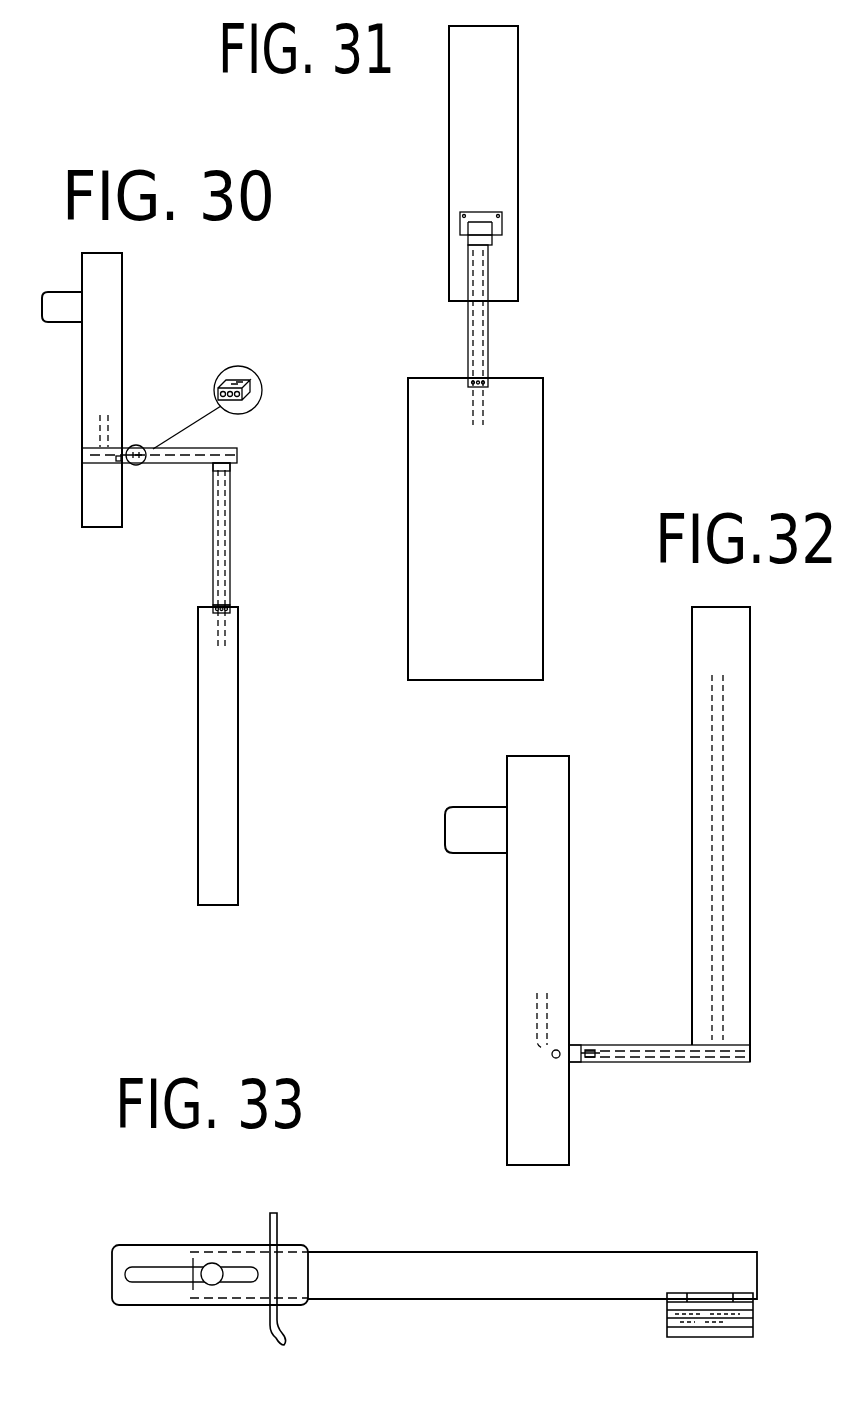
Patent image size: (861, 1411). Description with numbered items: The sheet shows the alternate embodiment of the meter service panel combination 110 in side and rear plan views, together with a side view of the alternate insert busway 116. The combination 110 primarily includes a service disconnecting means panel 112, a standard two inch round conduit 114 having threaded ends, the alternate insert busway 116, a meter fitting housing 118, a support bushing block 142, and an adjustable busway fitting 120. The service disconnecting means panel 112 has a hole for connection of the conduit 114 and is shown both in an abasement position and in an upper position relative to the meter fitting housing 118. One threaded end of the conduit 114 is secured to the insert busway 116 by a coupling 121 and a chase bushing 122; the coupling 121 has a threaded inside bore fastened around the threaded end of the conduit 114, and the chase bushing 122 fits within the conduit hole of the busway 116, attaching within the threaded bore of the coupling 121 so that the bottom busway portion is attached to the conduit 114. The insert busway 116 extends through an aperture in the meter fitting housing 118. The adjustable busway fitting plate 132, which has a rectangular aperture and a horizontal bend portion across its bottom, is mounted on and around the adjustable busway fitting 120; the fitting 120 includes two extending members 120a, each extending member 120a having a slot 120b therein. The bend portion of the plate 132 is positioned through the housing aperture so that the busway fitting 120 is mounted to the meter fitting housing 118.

In FIG. 30, the meter service panel combination 110 is at (53, 409).
In FIG. 31, the meter service panel combination 110 is at (587, 87).
In FIG. 32, the meter service panel combination 110 is at (811, 650).
In FIG. 30, the service disconnecting means panel 112 is at (229, 729).
In FIG. 31, the service disconnecting means panel 112 is at (546, 536).
In FIG. 32, the service disconnecting means panel 112 is at (733, 806).
In FIG. 30, the standard two inch round conduit 114 is at (62, 302).
In FIG. 31, the standard two inch round conduit 114 is at (489, 351).
In FIG. 32, the standard two inch round conduit 114 is at (470, 824).
In FIG. 30, the alternate insert busway 116 is at (160, 446).
In FIG. 31, the alternate insert busway 116 is at (480, 230).
In FIG. 32, the alternate insert busway 116 is at (708, 1063).
In FIG. 33, the alternate insert busway 116 is at (585, 1275).
In FIG. 30, the meter fitting housing 118 is at (132, 258).
In FIG. 32, the meter fitting housing 118 is at (560, 774).
In FIG. 30, the adjustable busway fitting 120 is at (117, 460).
In FIG. 33, the adjustable busway fitting 120 is at (130, 1306).
In FIG. 33, the extending member 120a is at (166, 1258).
In FIG. 33, the slot 120b is at (125, 1274).
In FIG. 30, the coupling 121 is at (234, 460).
In FIG. 31, the coupling 121 is at (494, 248).
In FIG. 32, the coupling 121 is at (576, 1045).
In FIG. 33, the chase bushing 122 is at (747, 1319).
In FIG. 33, the adjustable busway fitting plate 132 is at (284, 1323).
In FIG. 30, the support bushing block 142 is at (246, 365).